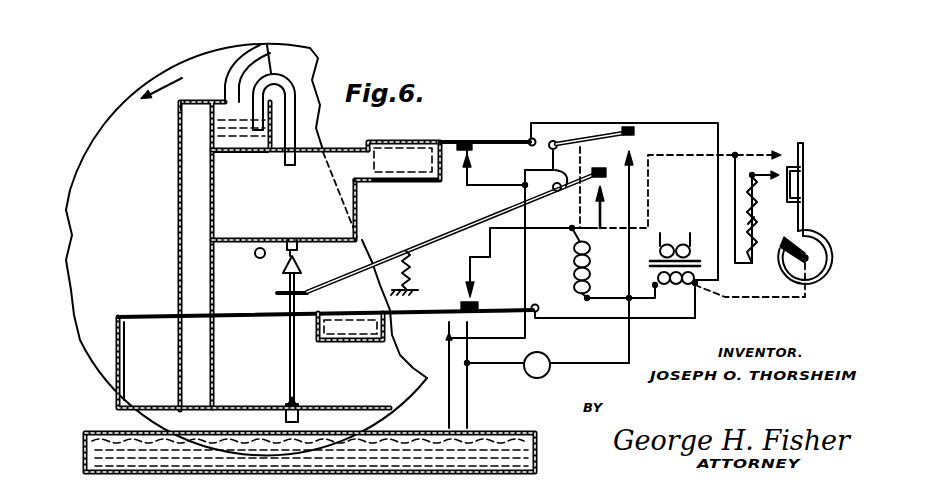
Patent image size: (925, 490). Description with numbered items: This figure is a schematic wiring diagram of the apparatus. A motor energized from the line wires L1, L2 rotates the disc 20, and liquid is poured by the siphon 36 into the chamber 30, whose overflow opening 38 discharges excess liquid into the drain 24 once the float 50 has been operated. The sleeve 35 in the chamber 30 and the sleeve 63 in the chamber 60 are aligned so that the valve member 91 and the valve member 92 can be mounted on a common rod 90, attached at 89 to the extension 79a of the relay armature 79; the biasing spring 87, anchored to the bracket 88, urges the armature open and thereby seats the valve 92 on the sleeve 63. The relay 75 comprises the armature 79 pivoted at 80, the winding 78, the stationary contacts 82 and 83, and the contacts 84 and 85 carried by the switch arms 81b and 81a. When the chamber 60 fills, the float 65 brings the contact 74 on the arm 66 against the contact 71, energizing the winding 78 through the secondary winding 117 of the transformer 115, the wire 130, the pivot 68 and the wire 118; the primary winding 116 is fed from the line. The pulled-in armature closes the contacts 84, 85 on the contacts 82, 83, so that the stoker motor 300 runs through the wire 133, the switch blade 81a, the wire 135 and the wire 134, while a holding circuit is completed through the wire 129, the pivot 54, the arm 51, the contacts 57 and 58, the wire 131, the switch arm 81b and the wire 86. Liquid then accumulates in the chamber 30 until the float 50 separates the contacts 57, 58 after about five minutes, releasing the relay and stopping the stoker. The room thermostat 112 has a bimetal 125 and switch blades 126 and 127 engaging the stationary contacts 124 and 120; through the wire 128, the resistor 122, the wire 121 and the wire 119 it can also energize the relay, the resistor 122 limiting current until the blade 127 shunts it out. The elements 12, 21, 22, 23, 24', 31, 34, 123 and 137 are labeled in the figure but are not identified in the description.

The water tank 12 is at (536, 450).
The disc 20 is at (121, 116).
The receiving cup 21 is at (214, 108).
The inlet chute 22 is at (244, 67).
The outer pipe wall 23 is at (192, 112).
The drain 24 is at (188, 256).
The lower duct wall 24' is at (254, 362).
The chamber 30 is at (323, 194).
The box bottom wall 31 is at (418, 182).
The float switch support 34 is at (291, 240).
The sleeve 35 is at (300, 246).
The siphon 36 is at (279, 88).
The overflow opening 38 is at (222, 156).
The float 50 is at (385, 150).
The arm 51 is at (493, 141).
The pivot 54 is at (531, 138).
The contact 57 is at (466, 142).
The contact 58 is at (473, 160).
The chamber 60 is at (166, 374).
The sleeve 63 is at (302, 412).
The float 65 is at (357, 313).
The arm 66 is at (441, 314).
The pivot 68 is at (540, 309).
The contact 71 is at (474, 284).
The contact 74 is at (479, 305).
The relay 75 is at (596, 264).
The winding 78 is at (576, 287).
The armature 79 is at (580, 215).
The armature extension 79a is at (420, 245).
The pivot 80 is at (565, 197).
The switch arm 81a is at (580, 133).
The switch arm 81b is at (554, 172).
The stationary contact 82 is at (611, 207).
The stationary contact 83 is at (634, 156).
The contact 84 is at (596, 163).
The contact 85 is at (631, 126).
The wire 86 is at (597, 232).
The biasing spring 87 is at (412, 262).
The bracket 88 is at (416, 290).
The attachment 89 is at (276, 292).
The valve rod 90 is at (289, 346).
The valve member 91 is at (284, 266).
The valve member 92 is at (287, 404).
The room thermostat 112 is at (824, 282).
The transformer 115 is at (667, 230).
The primary winding 116 is at (688, 248).
The secondary winding 117 is at (720, 281).
The wire 118 is at (604, 298).
The wire 119 is at (650, 175).
The stationary contact 120 is at (782, 152).
The wire 121 is at (735, 210).
The resistor 122 is at (758, 221).
The junction 123 is at (745, 155).
The stationary contact 124 is at (767, 217).
The bimetal 125 is at (818, 240).
The switch blade 126 is at (803, 190).
The switch blade 127 is at (805, 162).
The wire 128 is at (774, 298).
The wire 129 is at (688, 123).
The wire 130 is at (668, 320).
The wire 131 is at (490, 190).
The wire 133 is at (488, 338).
The wire 134 is at (510, 365).
The wire 135 is at (585, 362).
The conductor 137 is at (491, 256).
The stoker motor 300 is at (551, 371).
The line wire L1 is at (449, 418).
The line wire L2 is at (469, 418).